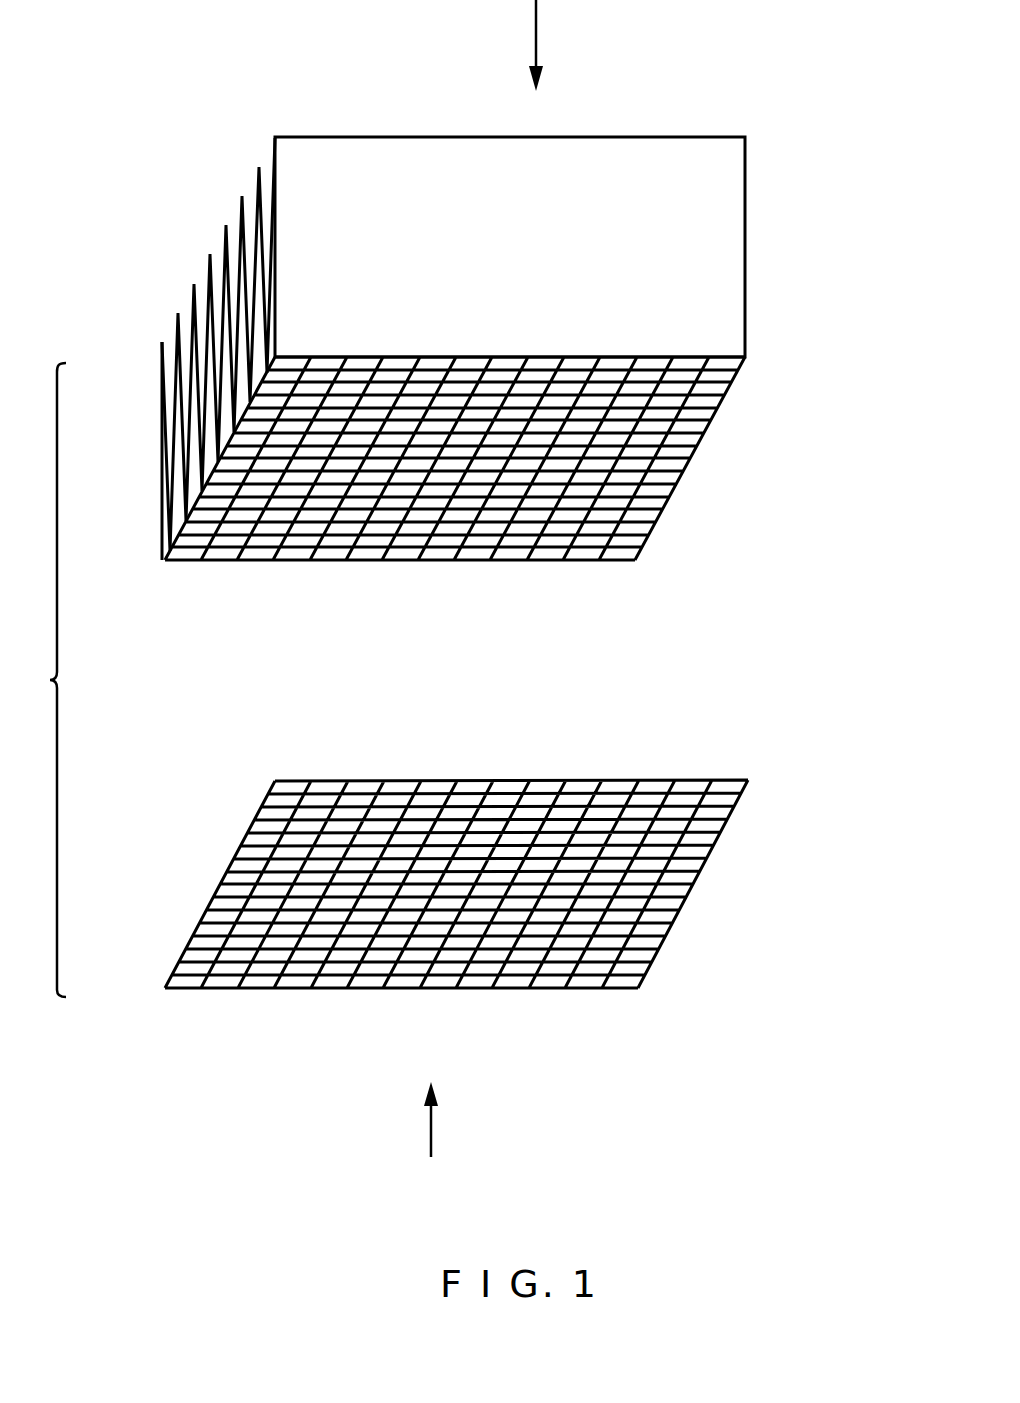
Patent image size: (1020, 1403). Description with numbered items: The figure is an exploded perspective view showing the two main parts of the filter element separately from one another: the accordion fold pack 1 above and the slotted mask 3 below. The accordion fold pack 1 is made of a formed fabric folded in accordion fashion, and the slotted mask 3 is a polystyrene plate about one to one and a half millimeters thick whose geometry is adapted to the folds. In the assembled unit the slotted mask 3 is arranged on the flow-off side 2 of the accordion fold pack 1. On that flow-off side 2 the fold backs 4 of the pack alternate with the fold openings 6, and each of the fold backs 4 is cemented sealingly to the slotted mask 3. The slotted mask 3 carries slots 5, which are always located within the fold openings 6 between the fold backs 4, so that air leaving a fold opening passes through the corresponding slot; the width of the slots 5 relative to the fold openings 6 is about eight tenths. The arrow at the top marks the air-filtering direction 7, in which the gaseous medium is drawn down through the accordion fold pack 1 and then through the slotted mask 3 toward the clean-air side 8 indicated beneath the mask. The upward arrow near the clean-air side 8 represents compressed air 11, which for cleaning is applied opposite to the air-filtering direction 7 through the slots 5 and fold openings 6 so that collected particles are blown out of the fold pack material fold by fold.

The accordion fold pack 1 is at (713, 243).
The flow-off side 2 is at (265, 535).
The slotted mask 3 is at (235, 903).
The fold backs 4 is at (633, 533).
The slots 5 is at (640, 945).
The fold openings 6 is at (560, 527).
The air-filtering direction 7 is at (536, 33).
The clean-air side 8 is at (439, 1064).
The compressed air 11 is at (432, 1130).